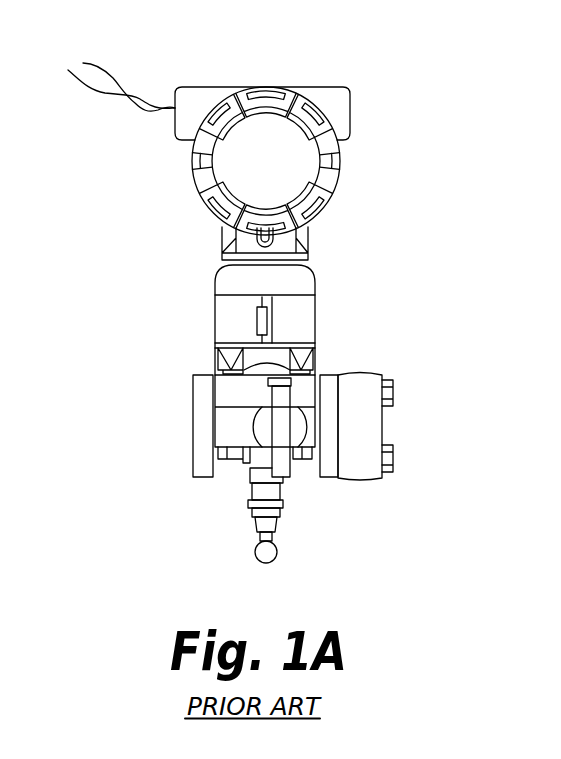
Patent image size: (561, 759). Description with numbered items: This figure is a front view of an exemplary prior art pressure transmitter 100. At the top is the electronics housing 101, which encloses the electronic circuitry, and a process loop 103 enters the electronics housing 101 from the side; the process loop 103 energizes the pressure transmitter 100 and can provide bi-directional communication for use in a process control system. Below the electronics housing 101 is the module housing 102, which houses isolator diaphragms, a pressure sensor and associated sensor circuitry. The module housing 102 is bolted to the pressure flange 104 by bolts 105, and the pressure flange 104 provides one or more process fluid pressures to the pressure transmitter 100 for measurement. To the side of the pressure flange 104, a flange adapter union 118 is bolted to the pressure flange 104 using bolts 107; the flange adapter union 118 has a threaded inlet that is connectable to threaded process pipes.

The pressure transmitter 100 is at (370, 210).
The electronics housing 101 is at (288, 86).
The module housing 102 is at (227, 390).
The process loop 103 is at (95, 92).
The pressure flange 104 is at (227, 430).
The bolts 105 is at (233, 347).
The bolts 107 is at (393, 384).
The flange adapter union 118 is at (357, 467).